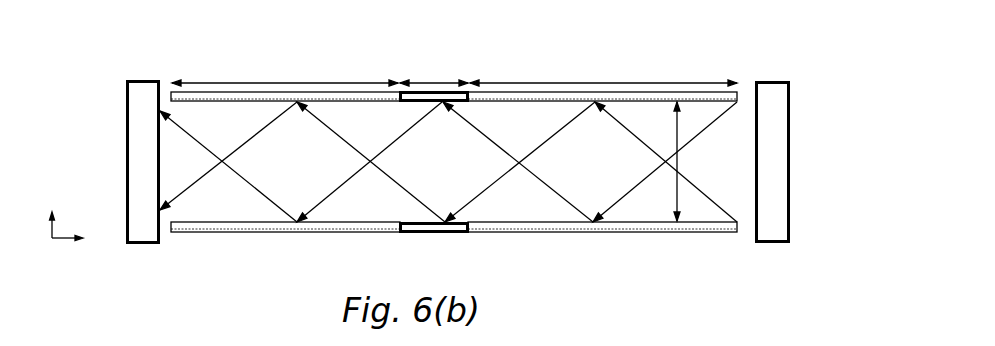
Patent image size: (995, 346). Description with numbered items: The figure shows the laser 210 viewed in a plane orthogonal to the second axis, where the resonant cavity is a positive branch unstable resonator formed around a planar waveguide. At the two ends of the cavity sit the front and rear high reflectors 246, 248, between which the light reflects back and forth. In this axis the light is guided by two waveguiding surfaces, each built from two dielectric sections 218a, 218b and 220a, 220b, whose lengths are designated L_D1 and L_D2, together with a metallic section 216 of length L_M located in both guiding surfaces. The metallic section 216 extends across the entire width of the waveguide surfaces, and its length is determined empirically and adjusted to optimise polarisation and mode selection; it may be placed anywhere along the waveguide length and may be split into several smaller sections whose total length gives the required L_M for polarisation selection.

The laser 210 is at (440, 158).
The metallic section 216 is at (444, 89).
The dielectric section 218a is at (349, 102).
The dielectric section 218b is at (520, 102).
The dielectric section 220a is at (327, 223).
The dielectric section 220b is at (532, 223).
The front high reflector 246 is at (770, 244).
The rear high reflector 248 is at (144, 245).